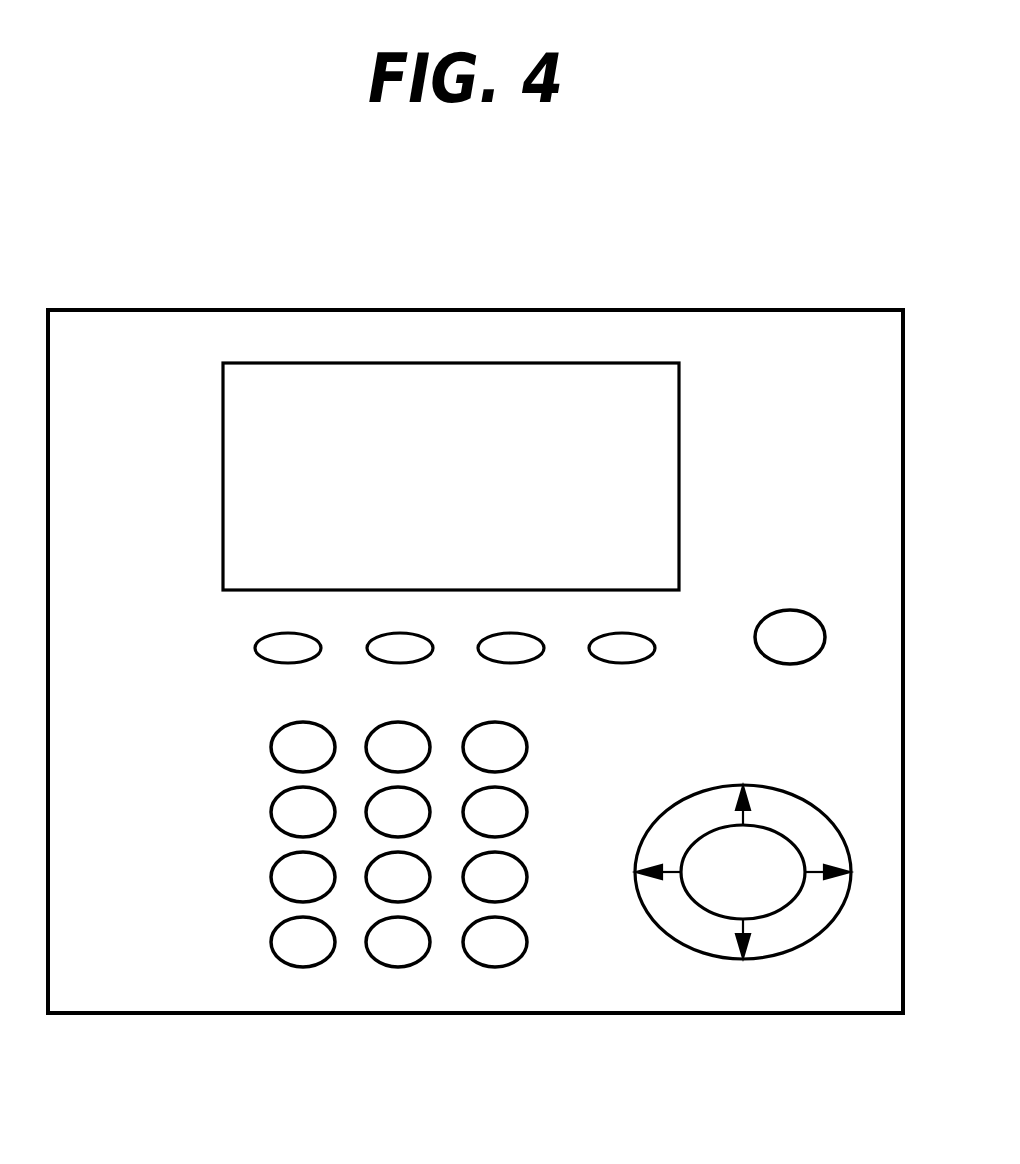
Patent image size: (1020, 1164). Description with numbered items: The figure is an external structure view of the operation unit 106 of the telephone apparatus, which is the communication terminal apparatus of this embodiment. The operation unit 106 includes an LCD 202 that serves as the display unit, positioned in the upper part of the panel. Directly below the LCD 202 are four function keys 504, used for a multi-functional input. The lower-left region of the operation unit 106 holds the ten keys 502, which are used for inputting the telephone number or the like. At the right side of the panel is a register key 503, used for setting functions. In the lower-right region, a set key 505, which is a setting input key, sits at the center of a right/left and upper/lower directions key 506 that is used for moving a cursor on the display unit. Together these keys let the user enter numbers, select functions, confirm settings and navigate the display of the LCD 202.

The operation unit 106 is at (826, 310).
The LCD 202 is at (680, 387).
The ten keys 502 is at (246, 728).
The register key 503 is at (800, 610).
The function keys 504 is at (655, 668).
The set key 505 is at (692, 904).
The right/left and upper/lower directions key 506 is at (700, 802).